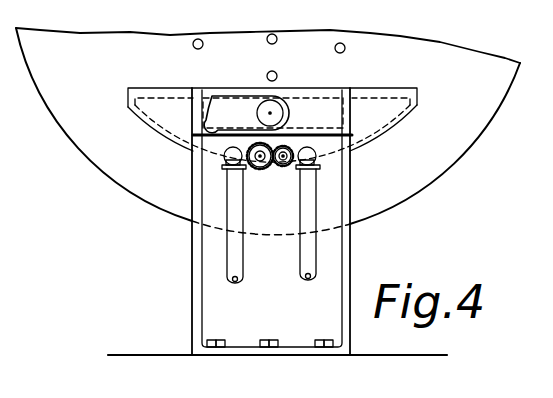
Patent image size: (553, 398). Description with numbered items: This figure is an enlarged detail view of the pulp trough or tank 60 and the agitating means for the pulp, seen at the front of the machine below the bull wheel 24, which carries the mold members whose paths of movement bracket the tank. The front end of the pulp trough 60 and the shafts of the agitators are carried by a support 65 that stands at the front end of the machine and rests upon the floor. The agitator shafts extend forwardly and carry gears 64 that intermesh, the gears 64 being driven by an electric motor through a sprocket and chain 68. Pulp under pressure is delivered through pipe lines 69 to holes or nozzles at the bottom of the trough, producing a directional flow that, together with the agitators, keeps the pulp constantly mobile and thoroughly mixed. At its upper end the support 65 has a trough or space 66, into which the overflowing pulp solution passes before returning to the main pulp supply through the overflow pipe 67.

The bull wheel 24 is at (467, 132).
The pulp trough 60 is at (373, 125).
The gears 64 is at (157, 278).
The support 65 is at (212, 308).
The trough 66 is at (327, 110).
The overflow pipe 67 is at (238, 107).
The sprocket and chain 68 is at (227, 163).
The pipe lines 69 is at (303, 258).